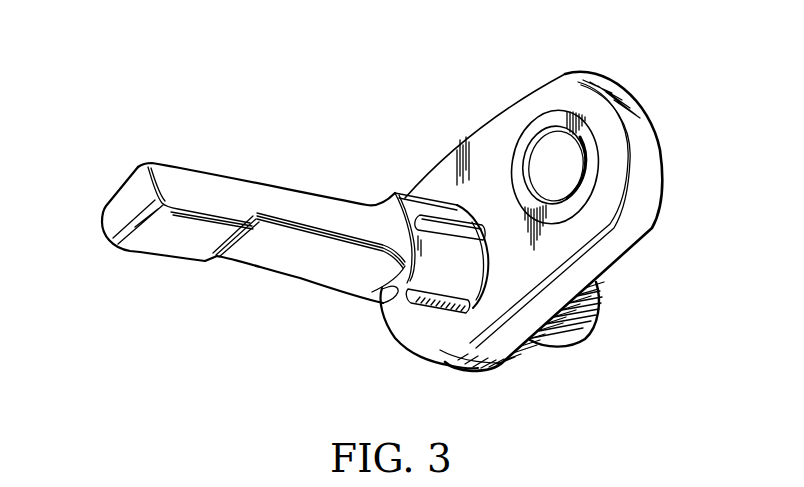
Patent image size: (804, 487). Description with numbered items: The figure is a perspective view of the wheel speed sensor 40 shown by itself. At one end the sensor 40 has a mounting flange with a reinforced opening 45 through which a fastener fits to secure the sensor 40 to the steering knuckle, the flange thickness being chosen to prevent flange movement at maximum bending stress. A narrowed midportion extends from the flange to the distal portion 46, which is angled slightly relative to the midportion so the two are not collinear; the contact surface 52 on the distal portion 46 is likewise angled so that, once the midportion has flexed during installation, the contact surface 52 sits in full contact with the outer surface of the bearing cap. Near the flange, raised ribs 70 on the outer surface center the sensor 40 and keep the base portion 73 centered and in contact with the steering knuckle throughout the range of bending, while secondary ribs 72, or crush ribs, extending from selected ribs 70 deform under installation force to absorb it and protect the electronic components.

The speed sensor 40 is at (354, 78).
The reinforced opening 45 is at (546, 142).
The distal portion 46 is at (138, 226).
The contact surface 52 is at (183, 246).
The raised ribs 70 is at (469, 295).
The secondary ribs 72 is at (445, 312).
The base portion 73 is at (426, 204).